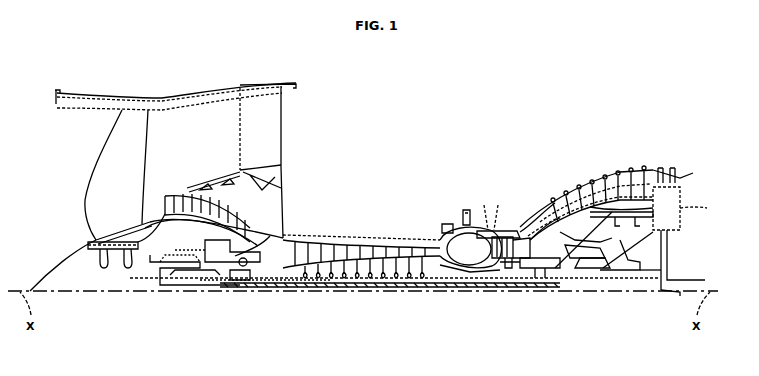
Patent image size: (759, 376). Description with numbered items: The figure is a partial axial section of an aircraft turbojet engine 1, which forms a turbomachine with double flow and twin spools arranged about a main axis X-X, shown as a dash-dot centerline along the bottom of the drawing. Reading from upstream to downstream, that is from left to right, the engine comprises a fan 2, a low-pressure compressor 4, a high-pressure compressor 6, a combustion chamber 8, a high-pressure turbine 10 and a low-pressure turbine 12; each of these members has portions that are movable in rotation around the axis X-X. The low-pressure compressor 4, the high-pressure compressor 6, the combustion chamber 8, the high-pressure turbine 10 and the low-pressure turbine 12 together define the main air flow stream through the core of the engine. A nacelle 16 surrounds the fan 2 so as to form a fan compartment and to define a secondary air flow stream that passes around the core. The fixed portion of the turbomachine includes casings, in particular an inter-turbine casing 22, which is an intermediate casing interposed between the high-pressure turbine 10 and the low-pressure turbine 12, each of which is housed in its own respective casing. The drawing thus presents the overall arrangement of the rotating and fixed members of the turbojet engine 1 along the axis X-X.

The turbojet engine 1 is at (460, 162).
The fan 2 is at (119, 177).
The low-pressure compressor 4 is at (196, 187).
The high-pressure compressor 6 is at (372, 242).
The combustion chamber 8 is at (472, 254).
The high-pressure turbine 10 is at (550, 206).
The low-pressure turbine 12 is at (601, 177).
The nacelle 16 is at (176, 103).
The inter-turbine casing 22 is at (562, 191).